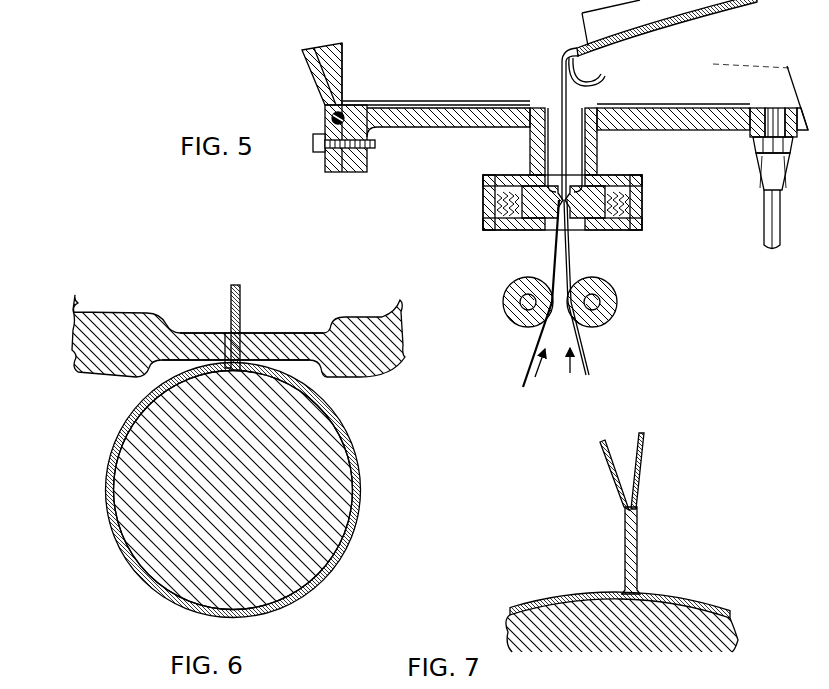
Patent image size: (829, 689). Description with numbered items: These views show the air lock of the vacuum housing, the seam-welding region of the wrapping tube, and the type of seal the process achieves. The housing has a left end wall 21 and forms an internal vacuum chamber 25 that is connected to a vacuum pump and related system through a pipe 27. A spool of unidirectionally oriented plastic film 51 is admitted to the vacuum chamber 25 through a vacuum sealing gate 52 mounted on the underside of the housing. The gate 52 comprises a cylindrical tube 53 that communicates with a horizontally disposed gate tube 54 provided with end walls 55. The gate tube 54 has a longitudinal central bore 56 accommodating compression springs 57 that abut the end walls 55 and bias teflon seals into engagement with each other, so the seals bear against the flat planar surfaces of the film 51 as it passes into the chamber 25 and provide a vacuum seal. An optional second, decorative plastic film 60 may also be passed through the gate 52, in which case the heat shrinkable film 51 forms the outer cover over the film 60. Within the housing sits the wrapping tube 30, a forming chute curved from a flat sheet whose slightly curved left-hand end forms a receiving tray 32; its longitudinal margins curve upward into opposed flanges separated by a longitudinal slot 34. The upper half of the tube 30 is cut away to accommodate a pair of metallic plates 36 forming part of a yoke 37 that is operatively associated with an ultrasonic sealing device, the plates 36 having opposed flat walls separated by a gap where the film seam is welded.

In FIG. 5, the left end wall 21 is at (303, 52).
In FIG. 5, the vacuum chamber 25 is at (391, 106).
In FIG. 5, the pipe 27 is at (755, 178).
In FIG. 5, the wrapping tube 30 is at (655, 28).
In FIG. 6, the wrapping tube 30 is at (361, 520).
In FIG. 5, the receiving tray 32 is at (566, 47).
In FIG. 6, the longitudinal slot 34 is at (226, 333).
In FIG. 6, the metallic plates 36 is at (178, 332).
In FIG. 6, the yoke 37 is at (78, 301).
In FIG. 5, the plastic film 51 is at (584, 370).
In FIG. 7, the plastic film 51 is at (723, 600).
In FIG. 5, the vacuum sealing gate 52 is at (481, 232).
In FIG. 5, the cylindrical tube 53 is at (530, 146).
In FIG. 5, the gate tube 54 is at (618, 230).
In FIG. 5, the end walls 55 is at (643, 205).
In FIG. 5, the longitudinal central bore 56 is at (487, 190).
In FIG. 5, the compression springs 57 is at (640, 177).
In FIG. 5, the second plastic film 60 is at (528, 369).
In FIG. 7, the second plastic film 60 is at (511, 607).